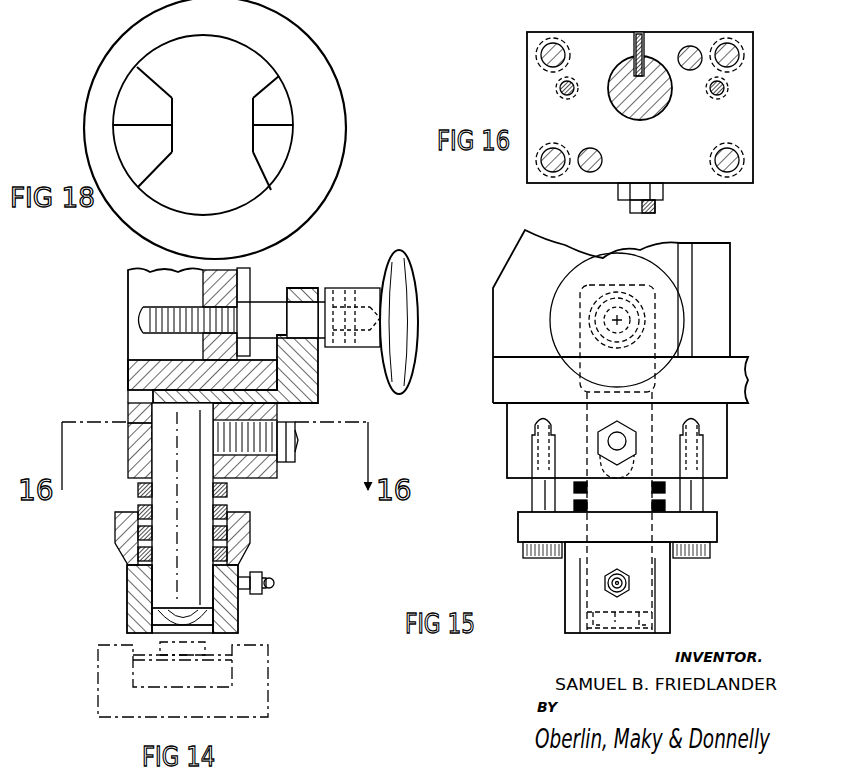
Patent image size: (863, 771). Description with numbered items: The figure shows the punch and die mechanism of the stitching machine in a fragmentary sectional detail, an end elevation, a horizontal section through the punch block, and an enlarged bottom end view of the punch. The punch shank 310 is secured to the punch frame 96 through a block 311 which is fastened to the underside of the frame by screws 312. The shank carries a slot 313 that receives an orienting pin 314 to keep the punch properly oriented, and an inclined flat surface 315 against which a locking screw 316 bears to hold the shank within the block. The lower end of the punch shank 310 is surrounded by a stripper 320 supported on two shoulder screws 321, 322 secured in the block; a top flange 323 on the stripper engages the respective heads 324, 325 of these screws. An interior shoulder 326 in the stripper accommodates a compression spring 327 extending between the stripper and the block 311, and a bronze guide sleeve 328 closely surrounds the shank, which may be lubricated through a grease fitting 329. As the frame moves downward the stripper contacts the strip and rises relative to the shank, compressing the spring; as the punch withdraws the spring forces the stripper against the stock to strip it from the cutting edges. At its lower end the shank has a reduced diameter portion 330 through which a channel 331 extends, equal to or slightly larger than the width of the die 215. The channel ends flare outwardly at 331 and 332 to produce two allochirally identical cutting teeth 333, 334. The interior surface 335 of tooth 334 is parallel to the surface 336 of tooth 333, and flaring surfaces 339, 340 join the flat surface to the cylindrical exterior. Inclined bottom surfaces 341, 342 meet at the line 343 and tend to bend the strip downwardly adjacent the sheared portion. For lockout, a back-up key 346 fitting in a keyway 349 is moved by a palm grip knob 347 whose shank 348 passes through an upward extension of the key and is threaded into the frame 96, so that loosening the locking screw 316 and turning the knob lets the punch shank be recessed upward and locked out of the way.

In FIG. 14, the punch frame 96 is at (240, 280).
In FIG. 15, the punch frame 96 is at (731, 310).
In FIG. 14, the die 215 is at (195, 656).
In FIG. 18, the punch shank 310 is at (340, 84).
In FIG. 16, the punch shank 310 is at (653, 113).
In FIG. 14, the punch shank 310 is at (160, 585).
In FIG. 16, the block 311 is at (697, 175).
In FIG. 14, the block 311 is at (278, 470).
In FIG. 15, the block 311 is at (722, 436).
In FIG. 16, the screws 312 is at (545, 52).
In FIG. 14, the slot 313 is at (128, 445).
In FIG. 16, the orienting pin 314 is at (644, 32).
In FIG. 14, the orienting pin 314 is at (128, 418).
In FIG. 14, the inclined flat surface 315 is at (212, 460).
In FIG. 15, the inclined flat surface 315 is at (630, 470).
In FIG. 16, the locking screw 316 is at (646, 215).
In FIG. 14, the locking screw 316 is at (296, 441).
In FIG. 15, the locking screw 316 is at (608, 440).
In FIG. 14, the stripper 320 is at (238, 616).
In FIG. 15, the stripper 320 is at (671, 599).
In FIG. 15, the shoulder screw 321 is at (532, 497).
In FIG. 15, the shoulder screw 322 is at (704, 497).
In FIG. 16, the top flange 323 is at (558, 88).
In FIG. 15, the top flange 323 is at (720, 525).
In FIG. 16, the screw head 324 is at (728, 88).
In FIG. 15, the screw head 324 is at (553, 560).
In FIG. 15, the screw head 325 is at (693, 560).
In FIG. 14, the interior shoulder 326 is at (138, 560).
In FIG. 14, the compression spring 327 is at (138, 490).
In FIG. 15, the compression spring 327 is at (582, 505).
In FIG. 14, the bronze guide sleeve 328 is at (152, 618).
In FIG. 15, the bronze guide sleeve 328 is at (580, 600).
In FIG. 14, the grease fitting 329 is at (274, 583).
In FIG. 15, the grease fitting 329 is at (625, 565).
In FIG. 18, the reduced diameter end portion 330 is at (271, 190).
In FIG. 18, the channel 331 is at (212, 188).
In FIG. 18, the flared channel end 332 is at (246, 56).
In FIG. 18, the cutting tooth 333 is at (143, 142).
In FIG. 18, the cutting tooth 334 is at (278, 144).
In FIG. 18, the interior surface 335 is at (253, 118).
In FIG. 18, the tooth surface 336 is at (173, 118).
In FIG. 18, the channel flaring surface 339 is at (263, 89).
In FIG. 18, the channel flaring surface 340 is at (265, 161).
In FIG. 18, the inclined bottom surface 341 is at (287, 97).
In FIG. 18, the inclined bottom surface 342 is at (295, 127).
In FIG. 18, the line 343 is at (294, 124).
In FIG. 14, the key 346 is at (318, 397).
In FIG. 15, the key 346 is at (656, 390).
In FIG. 14, the palm grip knob 347 is at (410, 300).
In FIG. 15, the palm grip knob 347 is at (562, 297).
In FIG. 14, the knob shank 348 is at (338, 300).
In FIG. 15, the knob shank 348 is at (606, 318).
In FIG. 14, the keyway 349 is at (128, 395).